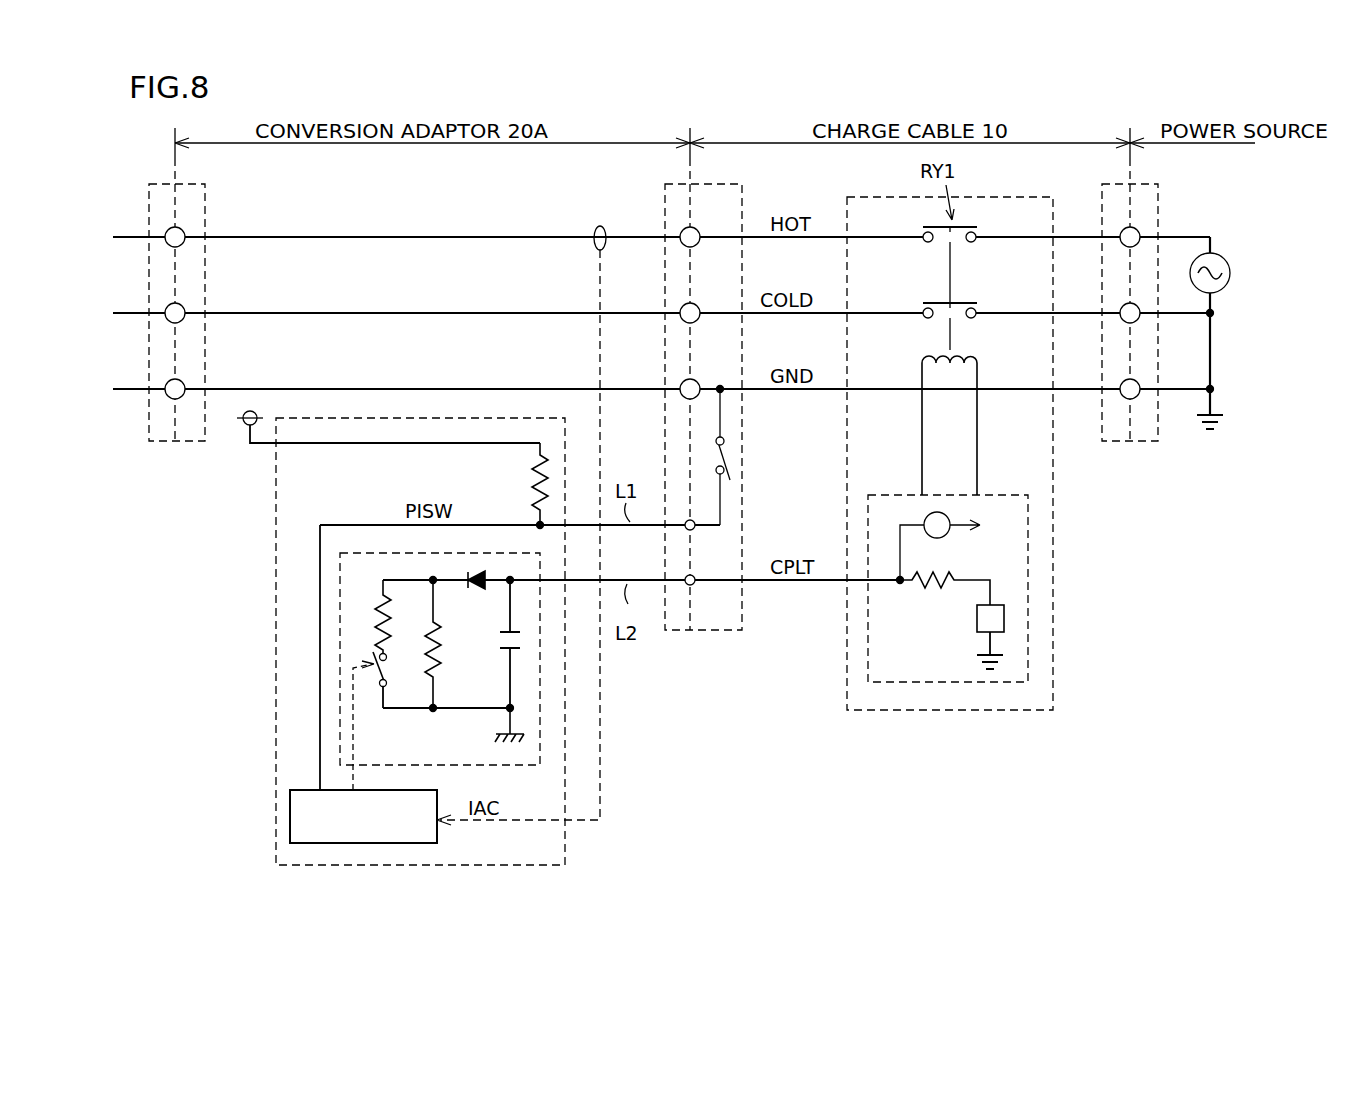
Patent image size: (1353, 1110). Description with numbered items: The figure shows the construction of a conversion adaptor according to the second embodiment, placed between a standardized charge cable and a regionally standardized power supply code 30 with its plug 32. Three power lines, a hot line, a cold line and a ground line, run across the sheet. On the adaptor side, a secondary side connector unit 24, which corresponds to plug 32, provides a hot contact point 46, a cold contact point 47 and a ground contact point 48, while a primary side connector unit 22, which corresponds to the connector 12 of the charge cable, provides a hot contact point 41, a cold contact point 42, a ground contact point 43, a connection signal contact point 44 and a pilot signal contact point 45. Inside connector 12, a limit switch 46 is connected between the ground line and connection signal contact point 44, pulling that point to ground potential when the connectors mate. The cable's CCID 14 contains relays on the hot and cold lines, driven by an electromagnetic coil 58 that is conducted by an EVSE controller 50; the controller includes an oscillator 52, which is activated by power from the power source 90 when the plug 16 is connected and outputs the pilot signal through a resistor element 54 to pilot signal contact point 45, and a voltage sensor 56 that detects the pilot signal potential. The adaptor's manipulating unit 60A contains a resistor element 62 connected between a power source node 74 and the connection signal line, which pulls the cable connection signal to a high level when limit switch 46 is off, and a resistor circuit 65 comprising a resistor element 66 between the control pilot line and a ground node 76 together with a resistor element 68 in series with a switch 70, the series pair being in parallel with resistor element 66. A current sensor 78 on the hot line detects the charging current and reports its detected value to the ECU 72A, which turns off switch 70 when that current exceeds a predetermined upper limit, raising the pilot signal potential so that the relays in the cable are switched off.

The connector 12 is at (705, 183).
The CCID 14 is at (992, 197).
The plug 16 is at (1114, 184).
The primary side connector unit 22 is at (680, 183).
The secondary side connector unit 24 is at (178, 184).
The power supply code 30 is at (100, 225).
The plug 32 is at (162, 184).
The HOT contact point 41 is at (693, 228).
The COLD contact point 42 is at (693, 304).
The GND contact point 43 is at (693, 380).
The connection signal contact point 44 is at (694, 532).
The pilot signal contact point 45 is at (694, 584).
The HOT contact point / limit switch 46 is at (183, 230).
The COLD contact point 47 is at (183, 306).
The GND contact point 48 is at (183, 382).
The EVSE controller 50 is at (996, 495).
The oscillator 52 is at (1004, 618).
The resistor element 54 is at (926, 588).
The voltage sensor 56 is at (942, 540).
The electromagnetic coil 58 is at (966, 352).
The manipulating unit 60A is at (275, 574).
The resistor element 62 is at (534, 486).
The resistor circuit 65 is at (508, 766).
The resistor element 66 is at (436, 638).
The resistor element 68 is at (386, 623).
The switch 70 is at (380, 668).
The ECU 72A is at (290, 818).
The power source node 74 is at (246, 427).
The ground node 76 is at (496, 737).
The current sensor 78 is at (600, 226).
The power source 90 is at (1230, 272).